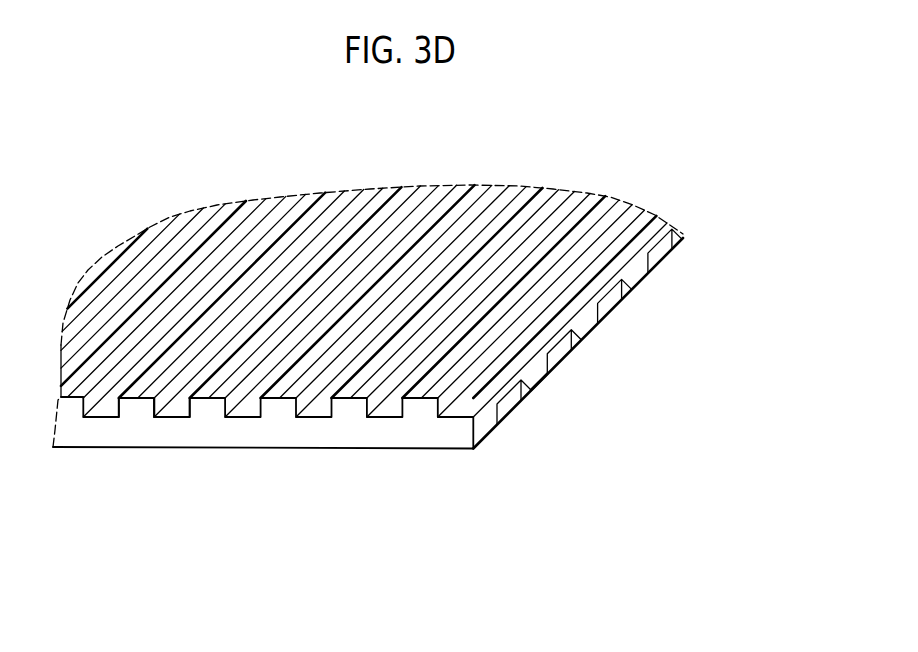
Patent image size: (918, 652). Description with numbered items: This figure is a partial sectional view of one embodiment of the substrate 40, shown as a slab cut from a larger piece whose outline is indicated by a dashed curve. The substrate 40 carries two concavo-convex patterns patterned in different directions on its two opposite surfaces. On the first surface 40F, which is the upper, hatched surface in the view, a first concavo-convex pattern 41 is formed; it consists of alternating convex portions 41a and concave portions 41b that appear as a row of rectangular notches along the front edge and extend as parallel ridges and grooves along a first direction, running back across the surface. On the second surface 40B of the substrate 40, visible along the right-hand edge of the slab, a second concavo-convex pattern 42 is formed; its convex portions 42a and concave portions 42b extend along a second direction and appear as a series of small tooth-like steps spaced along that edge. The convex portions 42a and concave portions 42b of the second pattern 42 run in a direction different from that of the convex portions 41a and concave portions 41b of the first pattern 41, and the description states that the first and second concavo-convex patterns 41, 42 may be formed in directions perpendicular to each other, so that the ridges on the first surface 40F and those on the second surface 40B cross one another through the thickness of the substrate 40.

The substrate 40 is at (383, 350).
The first surface 40F is at (592, 280).
The second surface 40B is at (589, 356).
The first concavo-convex pattern 41 is at (263, 289).
The convex portions 41a is at (138, 397).
The concave portions 41b is at (181, 416).
The second concavo-convex pattern 42 is at (589, 359).
The convex portions 42a is at (532, 393).
The concave portions 42b is at (552, 346).